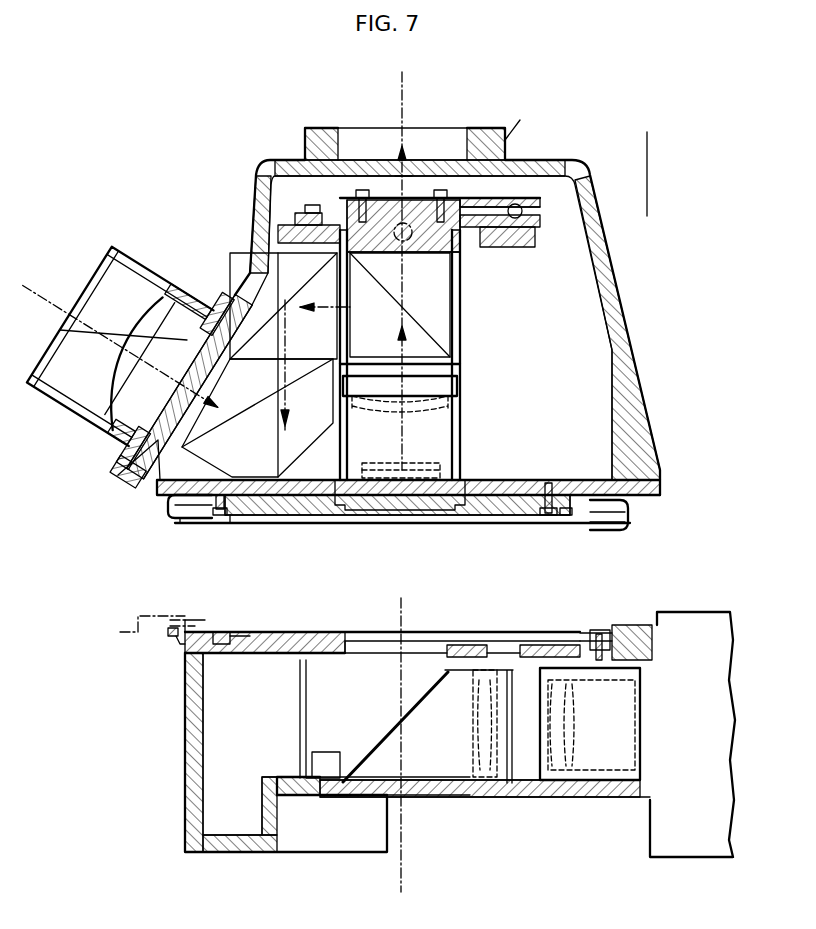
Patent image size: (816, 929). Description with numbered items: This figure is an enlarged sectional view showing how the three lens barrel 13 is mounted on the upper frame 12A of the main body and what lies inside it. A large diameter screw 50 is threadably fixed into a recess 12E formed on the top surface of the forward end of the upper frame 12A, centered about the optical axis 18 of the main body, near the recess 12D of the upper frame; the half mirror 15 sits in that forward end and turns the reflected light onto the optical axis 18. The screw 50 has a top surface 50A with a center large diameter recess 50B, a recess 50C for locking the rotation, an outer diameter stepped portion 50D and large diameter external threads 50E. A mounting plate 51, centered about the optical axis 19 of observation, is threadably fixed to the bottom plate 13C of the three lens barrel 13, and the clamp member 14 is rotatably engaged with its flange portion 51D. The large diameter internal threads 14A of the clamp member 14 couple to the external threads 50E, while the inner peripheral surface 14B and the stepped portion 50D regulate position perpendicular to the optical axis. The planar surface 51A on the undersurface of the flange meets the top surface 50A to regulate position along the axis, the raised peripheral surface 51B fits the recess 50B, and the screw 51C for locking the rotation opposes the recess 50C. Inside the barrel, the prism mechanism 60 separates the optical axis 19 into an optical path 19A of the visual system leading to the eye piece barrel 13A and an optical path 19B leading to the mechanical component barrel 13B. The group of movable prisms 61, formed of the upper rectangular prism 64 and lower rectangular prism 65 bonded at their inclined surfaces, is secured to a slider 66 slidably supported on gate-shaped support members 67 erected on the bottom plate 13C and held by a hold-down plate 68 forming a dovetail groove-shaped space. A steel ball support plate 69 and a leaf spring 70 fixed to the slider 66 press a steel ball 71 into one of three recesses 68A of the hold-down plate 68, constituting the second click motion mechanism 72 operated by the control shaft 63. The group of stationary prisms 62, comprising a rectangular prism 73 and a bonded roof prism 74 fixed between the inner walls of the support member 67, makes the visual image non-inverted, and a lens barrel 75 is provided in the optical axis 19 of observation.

The three lens barrel 13 is at (617, 297).
The eye piece barrel 13A is at (130, 275).
The mechanical component barrel 13B is at (529, 119).
The bottom plate 13C is at (640, 494).
The clamp member 14 is at (168, 510).
The large diameter internal threads 14A is at (178, 512).
The inner peripheral surface 14B is at (190, 520).
The half mirror 15 is at (380, 735).
The optical axis of the main body 18 is at (405, 837).
The optical axis of observation 19 is at (412, 440).
The optical path of a visual system 19A is at (110, 395).
The optical path of a set system 19B is at (410, 100).
The upper frame 12A is at (700, 615).
The recess 12D is at (277, 835).
The recess for mounting a three lens barrel 12E is at (615, 632).
The large diameter screw 50 is at (335, 640).
The top surface 50A is at (197, 612).
The center large diameter recess 50B is at (235, 632).
The recess for locking the rotation 50C is at (215, 630).
The outer diameter stepped portion 50D is at (150, 612).
The large diameter external threads 50E is at (176, 650).
The mounting plate 51 is at (305, 518).
The planar surface 51A is at (220, 516).
The raised peripheral surface 51B is at (228, 512).
The screw for locking the rotation 51C is at (232, 520).
The flange portion 51D is at (600, 530).
The prism mechanism 60 is at (205, 302).
The group of movable prisms 61 is at (460, 290).
The group of stationary prisms 62 is at (300, 270).
The control shaft 63 is at (420, 200).
The upper rectangular prism 64 is at (440, 329).
The lower rectangular prism 65 is at (438, 360).
The slider 66 is at (388, 198).
The support member 67 is at (275, 185).
The hold-down plate 68 is at (535, 237).
The recess 68A is at (540, 222).
The steel ball support plate 69 is at (522, 213).
The leaf spring 70 is at (520, 207).
The steel ball 71 is at (470, 199).
The second click motion mechanism 72 is at (664, 174).
The rectangular prism 73 is at (262, 330).
The roof prism 74 is at (128, 470).
The lens barrel 75 is at (440, 412).